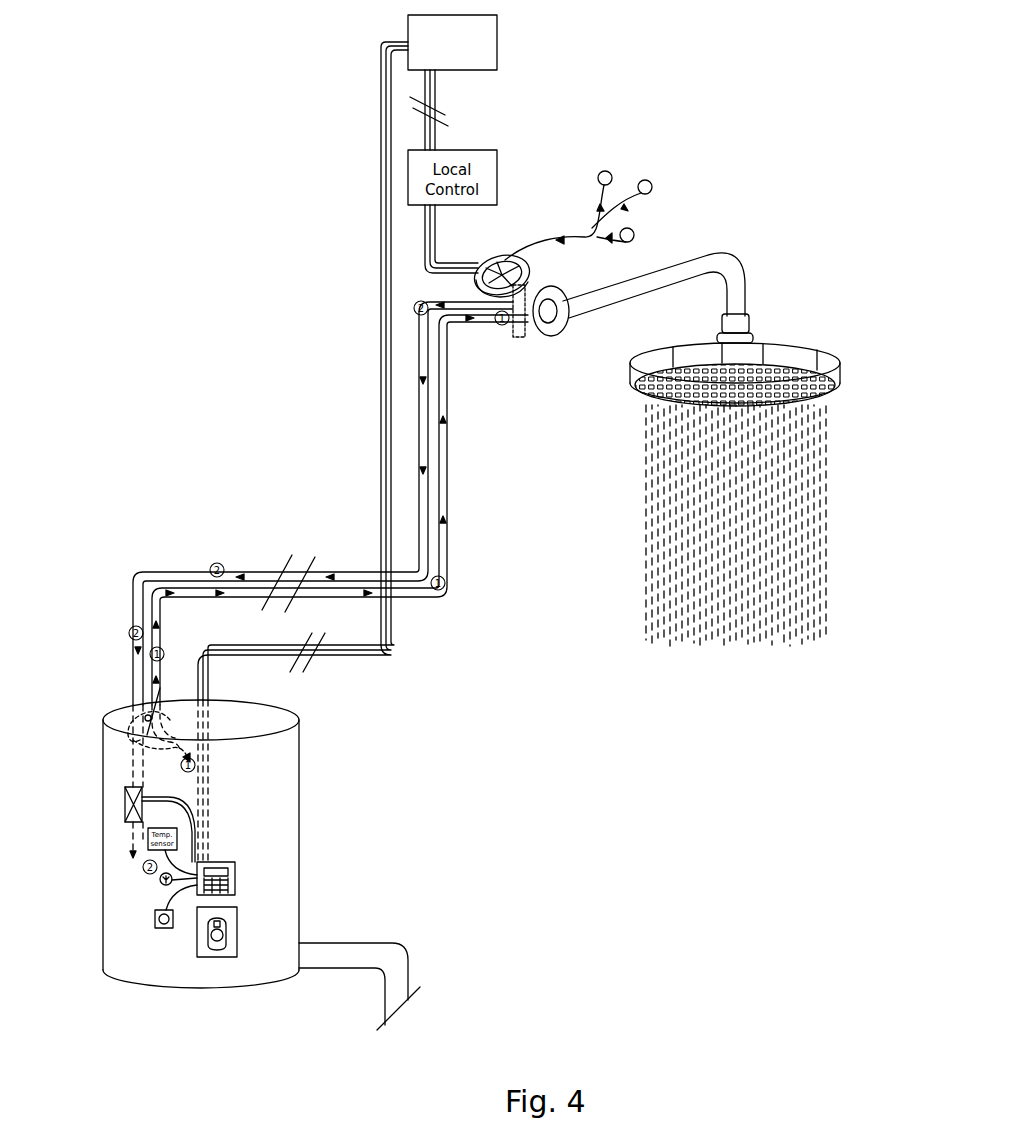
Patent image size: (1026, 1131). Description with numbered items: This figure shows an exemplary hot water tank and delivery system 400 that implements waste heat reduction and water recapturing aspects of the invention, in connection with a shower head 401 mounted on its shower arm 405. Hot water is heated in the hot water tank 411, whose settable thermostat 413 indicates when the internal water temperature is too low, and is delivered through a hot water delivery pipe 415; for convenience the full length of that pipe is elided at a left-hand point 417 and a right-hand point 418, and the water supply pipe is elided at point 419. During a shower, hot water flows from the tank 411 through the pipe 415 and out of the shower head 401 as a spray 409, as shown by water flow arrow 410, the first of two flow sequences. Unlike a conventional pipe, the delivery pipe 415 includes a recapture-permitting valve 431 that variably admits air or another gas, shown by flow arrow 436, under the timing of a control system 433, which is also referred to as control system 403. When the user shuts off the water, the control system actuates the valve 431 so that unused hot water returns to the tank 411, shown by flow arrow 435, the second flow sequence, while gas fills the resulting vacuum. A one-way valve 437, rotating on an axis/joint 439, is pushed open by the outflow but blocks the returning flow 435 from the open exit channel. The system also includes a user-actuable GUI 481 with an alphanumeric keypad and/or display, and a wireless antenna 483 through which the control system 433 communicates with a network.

The delivery system 400 is at (123, 478).
The shower head 401 is at (750, 404).
The control system 403 is at (818, 380).
The shower arm 405 is at (692, 267).
The water spray 409 is at (788, 543).
The water flow arrow 410 is at (483, 313).
The hot water tank 411 is at (93, 985).
The settable thermostat 413 is at (200, 957).
The hot water delivery pipe 415 is at (446, 512).
The elision point 417 is at (280, 552).
The elision point 418 is at (298, 605).
The elision point 419 is at (372, 1018).
The recapture-permitting valve 431 is at (532, 282).
The control system 433 is at (497, 33).
The flow arrow 435 is at (430, 404).
The flow arrow 436 is at (623, 186).
The one-way valve 437 is at (152, 698).
The axis/joint 439 is at (140, 715).
The GUI 481 is at (235, 877).
The wireless antenna 483 is at (160, 881).